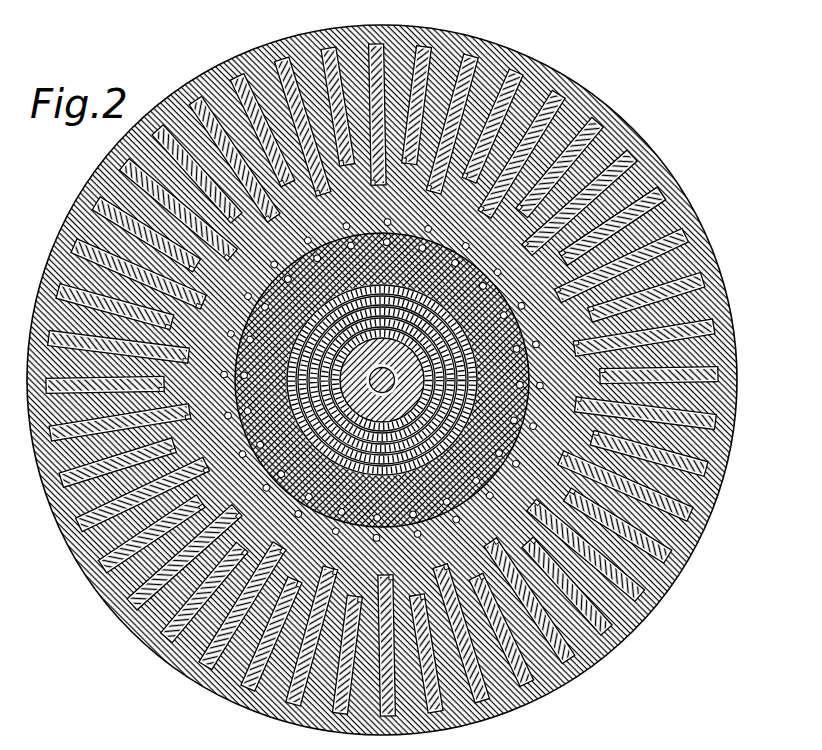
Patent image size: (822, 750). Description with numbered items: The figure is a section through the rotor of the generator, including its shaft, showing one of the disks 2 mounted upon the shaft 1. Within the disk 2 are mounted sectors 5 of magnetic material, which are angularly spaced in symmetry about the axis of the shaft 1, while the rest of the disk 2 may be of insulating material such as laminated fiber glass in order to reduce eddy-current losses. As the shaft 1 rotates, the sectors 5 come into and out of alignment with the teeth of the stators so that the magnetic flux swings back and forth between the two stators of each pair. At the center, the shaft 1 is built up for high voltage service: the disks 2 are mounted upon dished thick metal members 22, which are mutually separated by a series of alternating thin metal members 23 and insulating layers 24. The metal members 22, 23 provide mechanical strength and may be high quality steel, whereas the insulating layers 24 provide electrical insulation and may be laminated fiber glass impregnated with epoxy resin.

The shaft 1 is at (457, 253).
The disk 2 is at (621, 110).
The sector 5 is at (559, 255).
The thick metal member 22 is at (477, 356).
The thin metal member 23 is at (470, 402).
The insulating layer 24 is at (479, 372).